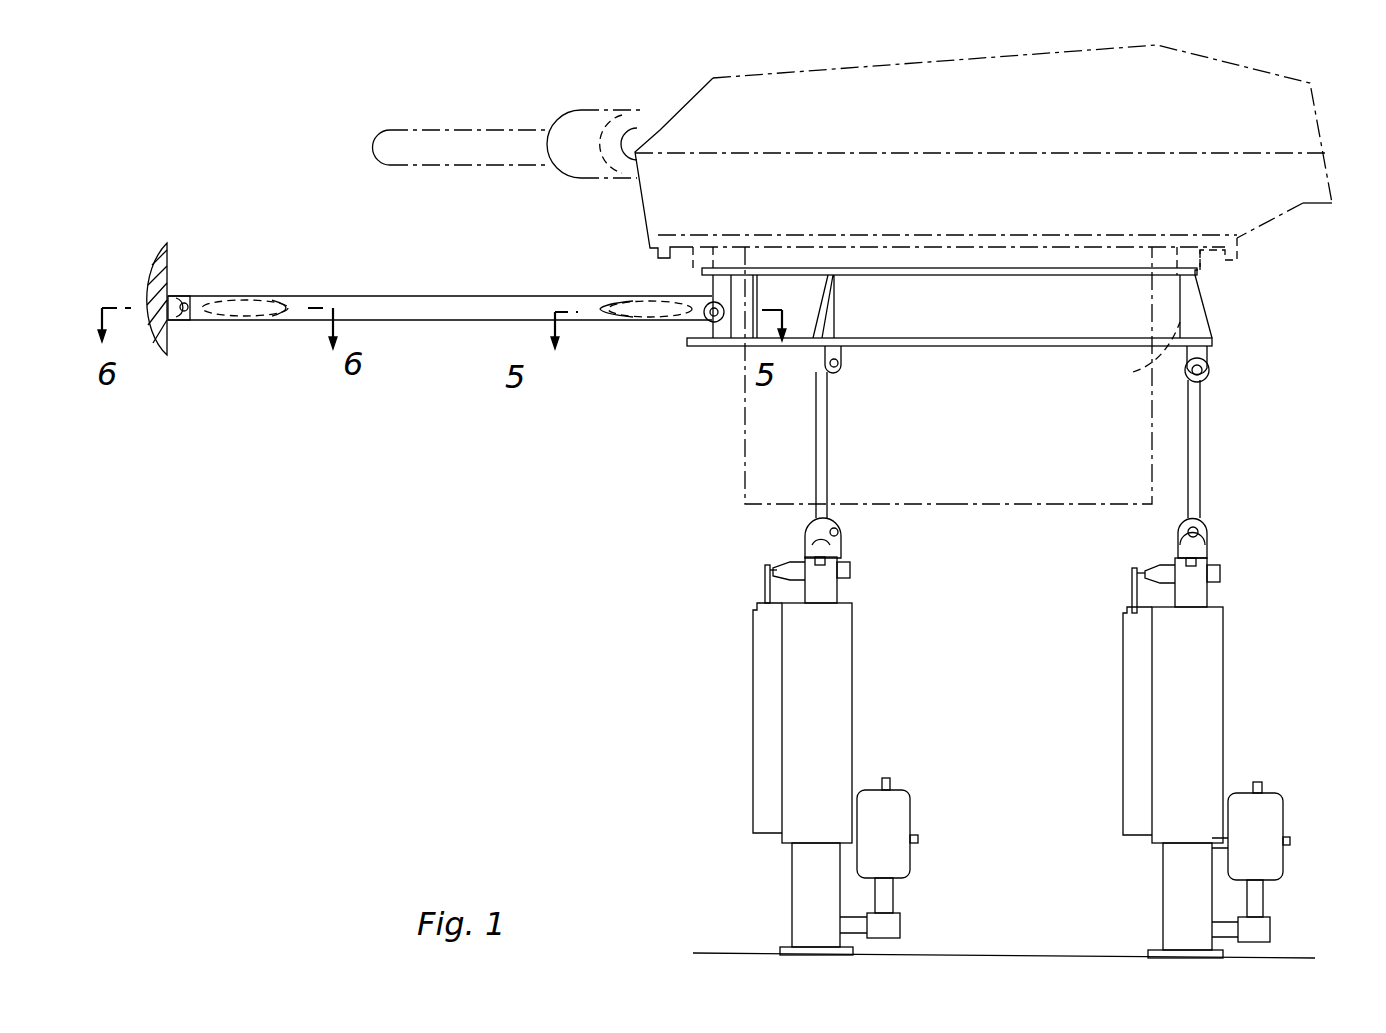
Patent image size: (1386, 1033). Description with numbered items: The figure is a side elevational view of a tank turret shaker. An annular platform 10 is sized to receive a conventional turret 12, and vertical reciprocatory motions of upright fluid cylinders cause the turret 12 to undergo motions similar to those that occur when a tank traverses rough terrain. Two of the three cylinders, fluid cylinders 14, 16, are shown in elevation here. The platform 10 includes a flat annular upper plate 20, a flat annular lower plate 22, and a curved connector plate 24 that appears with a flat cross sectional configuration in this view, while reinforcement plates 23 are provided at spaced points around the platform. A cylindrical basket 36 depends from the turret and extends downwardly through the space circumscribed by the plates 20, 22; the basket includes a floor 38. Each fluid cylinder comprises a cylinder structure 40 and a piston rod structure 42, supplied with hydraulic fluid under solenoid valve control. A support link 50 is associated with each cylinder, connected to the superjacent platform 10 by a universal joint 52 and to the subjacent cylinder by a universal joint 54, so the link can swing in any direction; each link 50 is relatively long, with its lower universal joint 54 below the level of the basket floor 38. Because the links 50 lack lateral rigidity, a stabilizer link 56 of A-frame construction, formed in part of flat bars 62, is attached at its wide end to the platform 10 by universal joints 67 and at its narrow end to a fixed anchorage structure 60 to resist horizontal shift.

The annular platform 10 is at (958, 346).
The turret 12 is at (1275, 210).
The fluid cylinder 14 is at (763, 703).
The fluid cylinder 16 is at (1223, 695).
The upper plate 20 is at (1097, 275).
The lower plate 22 is at (1075, 347).
The reinforcement plates 23 is at (1268, 332).
The connector plate 24 is at (1145, 350).
The basket 36 is at (743, 490).
The floor 38 is at (1073, 505).
The cylinder structure 40 is at (797, 903).
The piston rod structure 42 is at (838, 592).
The support link 50 is at (827, 435).
The universal joint 52 is at (840, 372).
The universal joint 54 is at (842, 527).
The stabilizer link 56 is at (435, 296).
The anchorage structure 60 is at (167, 292).
The flat bars 62 is at (648, 323).
The universal joints 67 is at (705, 320).